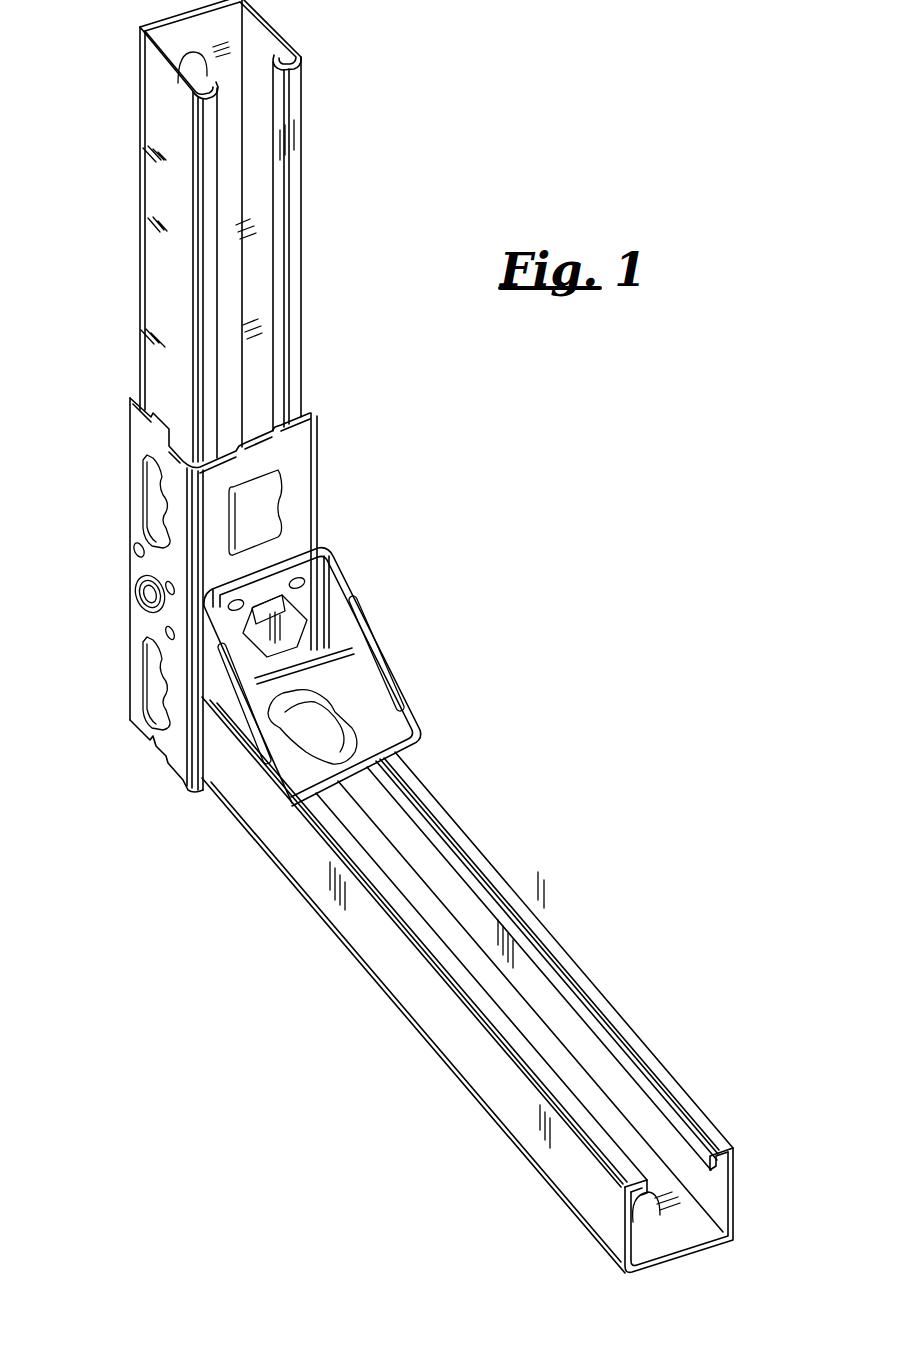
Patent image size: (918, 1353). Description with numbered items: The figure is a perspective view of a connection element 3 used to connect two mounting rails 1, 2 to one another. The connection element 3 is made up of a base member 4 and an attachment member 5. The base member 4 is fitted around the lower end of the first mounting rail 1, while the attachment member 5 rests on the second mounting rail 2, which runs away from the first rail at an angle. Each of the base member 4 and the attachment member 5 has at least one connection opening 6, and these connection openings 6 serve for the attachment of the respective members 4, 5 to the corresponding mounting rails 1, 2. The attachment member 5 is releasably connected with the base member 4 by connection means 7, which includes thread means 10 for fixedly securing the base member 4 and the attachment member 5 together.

The mounting rail 1 is at (160, 216).
The mounting rail 2 is at (433, 1012).
The connection element 3 is at (86, 602).
The base member 4 is at (322, 468).
The attachment member 5 is at (354, 667).
The connection opening 6 is at (158, 493).
The connection means 7 is at (312, 597).
The thread means 10 is at (280, 590).